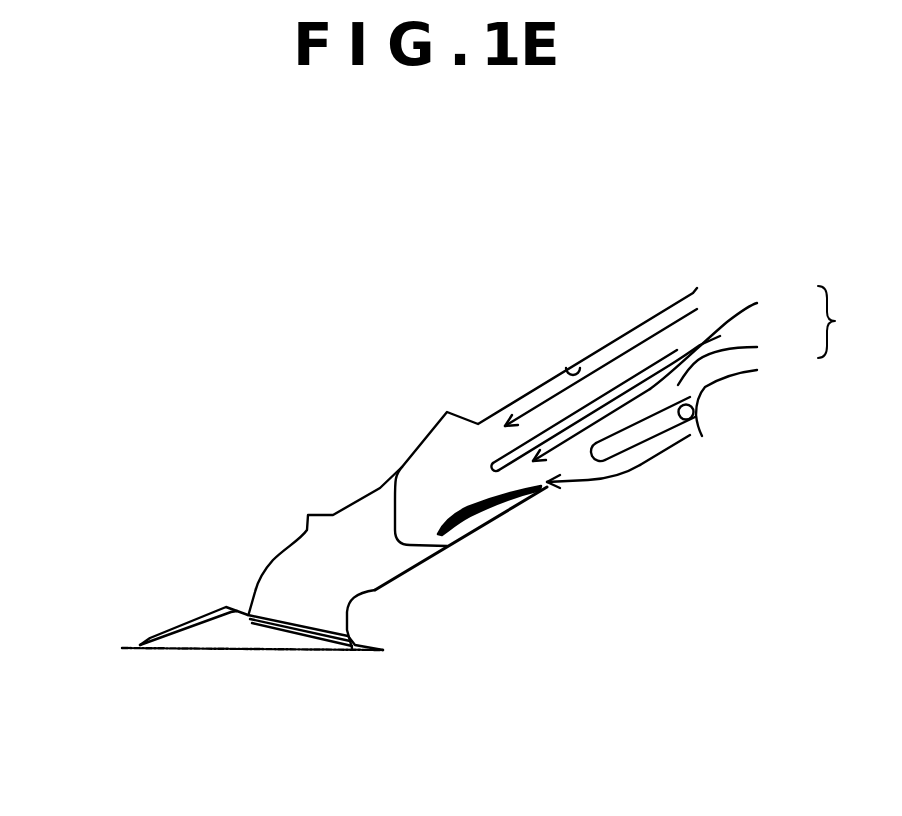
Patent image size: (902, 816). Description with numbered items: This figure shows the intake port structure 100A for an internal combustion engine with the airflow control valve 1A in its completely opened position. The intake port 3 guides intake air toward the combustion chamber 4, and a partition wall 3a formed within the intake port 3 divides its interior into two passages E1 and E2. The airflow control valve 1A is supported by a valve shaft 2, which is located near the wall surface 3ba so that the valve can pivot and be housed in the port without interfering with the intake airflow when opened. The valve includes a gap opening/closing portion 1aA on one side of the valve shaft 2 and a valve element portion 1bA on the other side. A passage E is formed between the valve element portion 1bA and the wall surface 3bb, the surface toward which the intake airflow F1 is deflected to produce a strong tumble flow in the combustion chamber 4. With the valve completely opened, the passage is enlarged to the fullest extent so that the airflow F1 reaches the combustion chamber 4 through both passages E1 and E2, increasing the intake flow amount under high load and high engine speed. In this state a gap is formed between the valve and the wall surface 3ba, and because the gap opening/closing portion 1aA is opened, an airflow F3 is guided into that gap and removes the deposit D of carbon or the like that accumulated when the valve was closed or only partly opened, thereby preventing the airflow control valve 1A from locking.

The intake port structure 100A is at (762, 272).
The airflow control valve 1A is at (849, 322).
The gap opening/closing portion 1aA is at (700, 396).
The valve element portion 1bA is at (730, 338).
The valve shaft 2 is at (702, 436).
The intake port 3 is at (407, 453).
The partition wall 3a is at (517, 462).
The wall surface 3ba is at (690, 445).
The wall surface 3bb is at (618, 473).
The combustion chamber 4 is at (200, 630).
The deposit D is at (458, 531).
The passage E is at (620, 390).
The passage E1 is at (540, 420).
The passage E2 is at (568, 457).
The intake airflow F1 is at (645, 427).
The airflow F3 is at (630, 442).